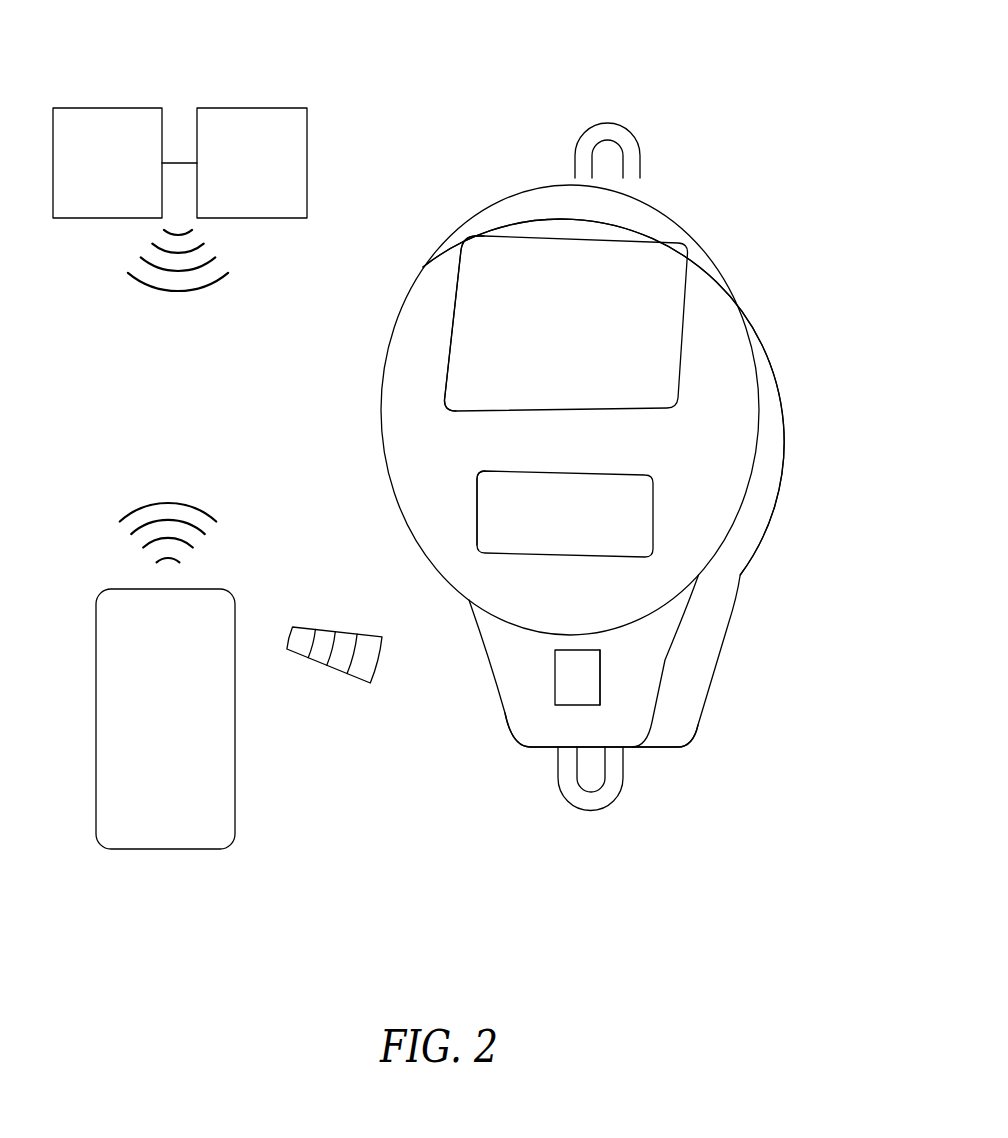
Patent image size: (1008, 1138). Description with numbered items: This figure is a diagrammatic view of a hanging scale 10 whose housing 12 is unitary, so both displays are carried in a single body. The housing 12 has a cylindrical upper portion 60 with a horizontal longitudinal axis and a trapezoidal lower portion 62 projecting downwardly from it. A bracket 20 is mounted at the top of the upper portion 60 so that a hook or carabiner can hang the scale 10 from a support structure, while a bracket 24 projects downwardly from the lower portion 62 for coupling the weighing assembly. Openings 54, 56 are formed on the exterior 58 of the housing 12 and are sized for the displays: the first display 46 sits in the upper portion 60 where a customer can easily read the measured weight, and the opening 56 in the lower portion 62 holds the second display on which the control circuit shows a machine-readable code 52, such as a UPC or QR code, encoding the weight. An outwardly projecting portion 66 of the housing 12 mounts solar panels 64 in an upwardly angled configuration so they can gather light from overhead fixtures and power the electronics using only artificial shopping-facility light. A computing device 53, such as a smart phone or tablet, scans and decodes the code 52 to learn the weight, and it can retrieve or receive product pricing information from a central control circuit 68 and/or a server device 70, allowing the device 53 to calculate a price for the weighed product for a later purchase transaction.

The scale 10 is at (703, 201).
The housing 12 is at (745, 268).
The bracket 20 is at (608, 123).
The bracket 24 is at (612, 788).
The first display 46 is at (508, 530).
The machine-readable code 52 is at (560, 677).
The computing device 53 is at (165, 850).
The opening 54 is at (490, 502).
The opening 56 is at (602, 672).
The exterior 58 is at (720, 368).
The cylindrical upper portion 60 is at (405, 380).
The trapezoidal lower portion 62 is at (633, 708).
The solar panels 64 is at (497, 235).
The outwardly projecting portion 66 is at (451, 325).
The central control circuit 68 is at (108, 108).
The server device 70 is at (252, 108).